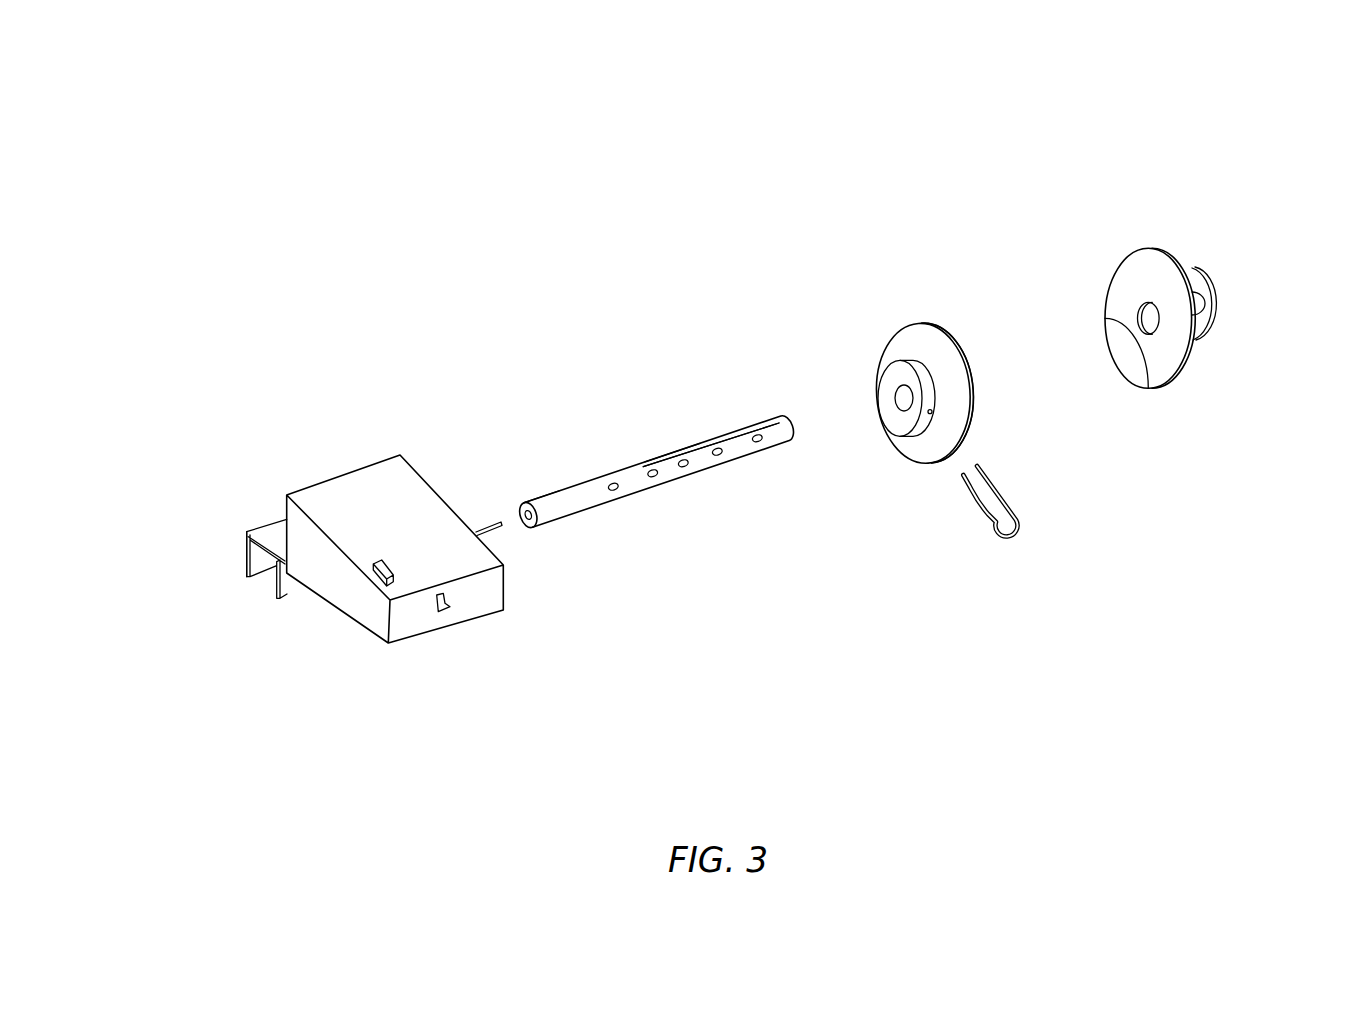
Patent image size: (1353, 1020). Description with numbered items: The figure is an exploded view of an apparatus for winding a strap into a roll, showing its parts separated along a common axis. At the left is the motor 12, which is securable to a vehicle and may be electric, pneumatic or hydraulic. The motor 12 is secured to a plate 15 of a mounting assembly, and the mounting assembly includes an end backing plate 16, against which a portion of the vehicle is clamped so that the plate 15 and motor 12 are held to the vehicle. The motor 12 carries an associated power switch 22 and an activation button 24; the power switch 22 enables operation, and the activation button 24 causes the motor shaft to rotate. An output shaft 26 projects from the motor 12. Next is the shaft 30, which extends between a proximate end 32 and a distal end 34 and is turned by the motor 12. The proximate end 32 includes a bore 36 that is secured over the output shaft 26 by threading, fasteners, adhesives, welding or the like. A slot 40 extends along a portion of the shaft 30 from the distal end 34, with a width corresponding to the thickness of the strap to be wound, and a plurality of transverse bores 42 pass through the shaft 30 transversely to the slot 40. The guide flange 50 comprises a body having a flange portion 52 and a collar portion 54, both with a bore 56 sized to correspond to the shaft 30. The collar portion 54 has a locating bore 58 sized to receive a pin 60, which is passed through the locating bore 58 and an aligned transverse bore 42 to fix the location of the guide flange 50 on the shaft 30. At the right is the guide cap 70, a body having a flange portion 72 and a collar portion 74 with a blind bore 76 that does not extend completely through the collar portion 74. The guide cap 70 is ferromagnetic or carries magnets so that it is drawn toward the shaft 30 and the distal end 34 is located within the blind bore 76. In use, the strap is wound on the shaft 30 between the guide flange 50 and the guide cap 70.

The motor 12 is at (369, 468).
The plate 15 is at (265, 533).
The end backing plate 16 is at (247, 555).
The power switch 22 is at (378, 572).
The activation button 24 is at (447, 610).
The output shaft 26 is at (476, 523).
The shaft 30 is at (652, 487).
The proximate end 32 is at (527, 503).
The distal end 34 is at (782, 415).
The bore 36 is at (525, 530).
The slot 40 is at (680, 448).
The transverse bores 42 is at (757, 443).
The guide flange 50 is at (927, 325).
The flange portion 52 is at (953, 335).
The collar portion 54 is at (892, 375).
The bore 56 is at (902, 410).
The locating bore 58 is at (932, 410).
The pin 60 is at (1013, 502).
The guide cap 70 is at (1152, 248).
The flange portion 72 is at (1157, 367).
The collar portion 74 is at (1193, 268).
The blind bore 76 is at (1145, 317).